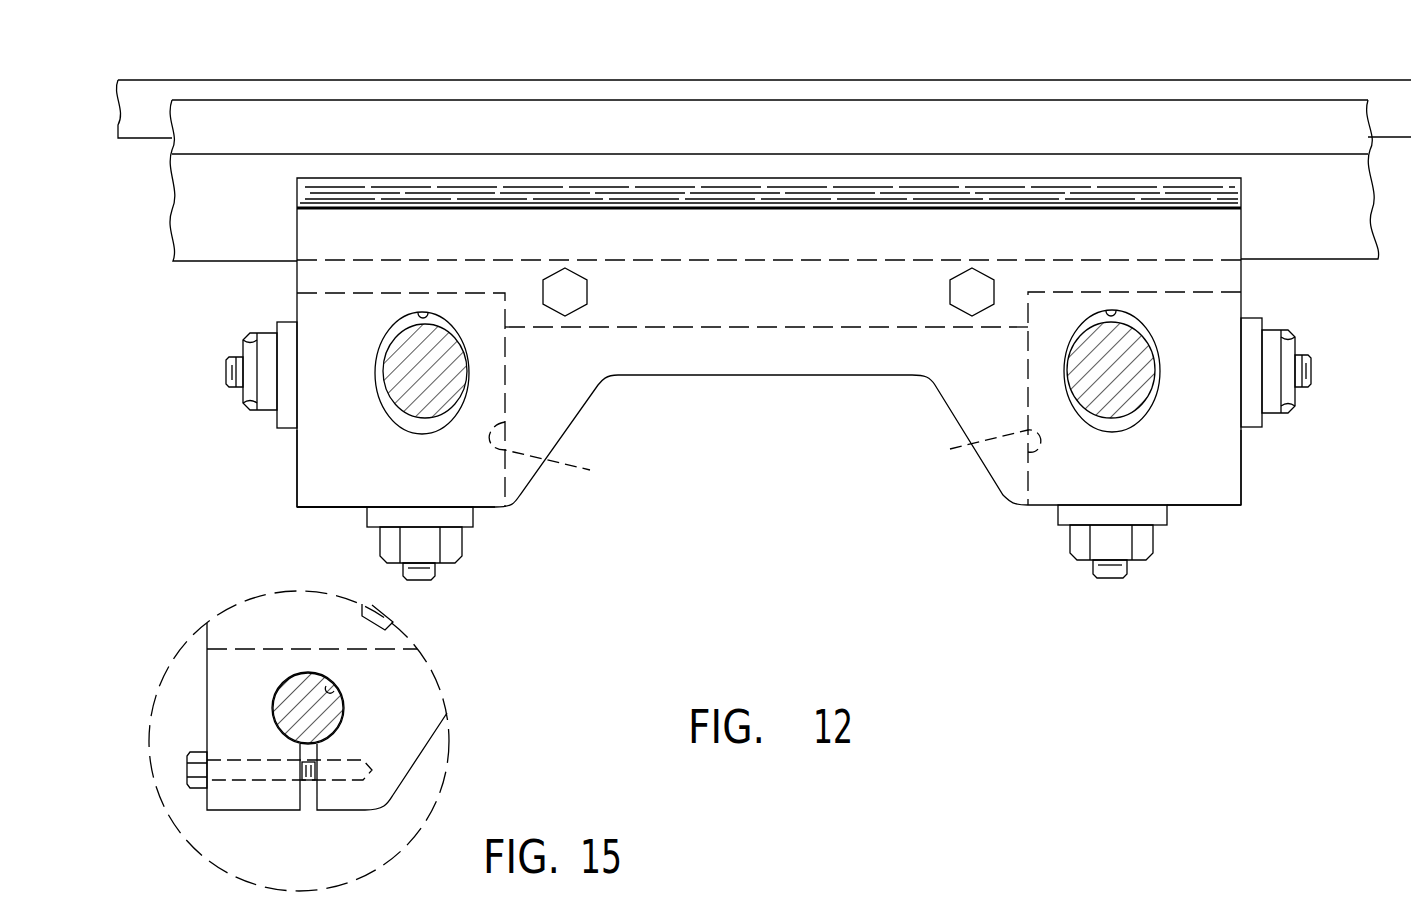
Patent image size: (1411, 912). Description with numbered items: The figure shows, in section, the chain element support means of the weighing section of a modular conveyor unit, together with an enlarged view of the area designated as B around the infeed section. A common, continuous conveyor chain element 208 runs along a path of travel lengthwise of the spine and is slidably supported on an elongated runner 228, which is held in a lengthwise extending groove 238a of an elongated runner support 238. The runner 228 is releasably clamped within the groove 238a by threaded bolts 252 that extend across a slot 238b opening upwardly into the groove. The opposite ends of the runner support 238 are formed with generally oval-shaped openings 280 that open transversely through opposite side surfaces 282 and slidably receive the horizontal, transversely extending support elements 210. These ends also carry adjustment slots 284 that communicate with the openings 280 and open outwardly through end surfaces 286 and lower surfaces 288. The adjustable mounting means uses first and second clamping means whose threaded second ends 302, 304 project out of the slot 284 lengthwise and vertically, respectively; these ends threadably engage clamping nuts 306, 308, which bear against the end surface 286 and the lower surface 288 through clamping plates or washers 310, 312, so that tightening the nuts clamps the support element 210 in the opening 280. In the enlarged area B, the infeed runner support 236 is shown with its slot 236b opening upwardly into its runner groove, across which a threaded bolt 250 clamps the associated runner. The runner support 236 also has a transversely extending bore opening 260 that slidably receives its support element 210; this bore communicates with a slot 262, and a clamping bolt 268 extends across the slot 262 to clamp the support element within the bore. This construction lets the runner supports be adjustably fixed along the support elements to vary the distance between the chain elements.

In FIG. 12, the conveyor chain element 208 is at (1340, 79).
In FIG. 12, the runner 228 is at (228, 243).
In FIG. 12, the runner support 238 is at (738, 380).
In FIG. 12, the groove 238a is at (1183, 260).
In FIG. 12, the slot 238b is at (828, 325).
In FIG. 12, the oval-shaped opening 280 is at (425, 316).
In FIG. 12, the support element 210 is at (398, 382).
In FIG. 15, the support element 210 is at (330, 715).
In FIG. 12, the threaded bolt 252 is at (580, 295).
In FIG. 12, the adjustment slot 284 is at (765, 452).
In FIG. 12, the end surface 286 is at (297, 490).
In FIG. 12, the lower surface 288 is at (335, 507).
In FIG. 12, the side surface 282 is at (450, 494).
In FIG. 12, the threaded second end 302 is at (226, 376).
In FIG. 12, the threaded second end 304 is at (1115, 578).
In FIG. 12, the clamping nut 306 is at (258, 408).
In FIG. 12, the clamping nut 308 is at (456, 550).
In FIG. 12, the clamping plate 310 is at (288, 427).
In FIG. 12, the clamping plate 312 is at (470, 518).
In FIG. 15, the runner support 236 is at (200, 688).
In FIG. 15, the slot 236b is at (400, 645).
In FIG. 15, the threaded bolt 250 is at (385, 615).
In FIG. 15, the bore opening 260 is at (331, 694).
In FIG. 15, the slot 262 is at (310, 797).
In FIG. 15, the clamping bolt 268 is at (185, 770).
In FIG. 15, the area B is at (450, 748).